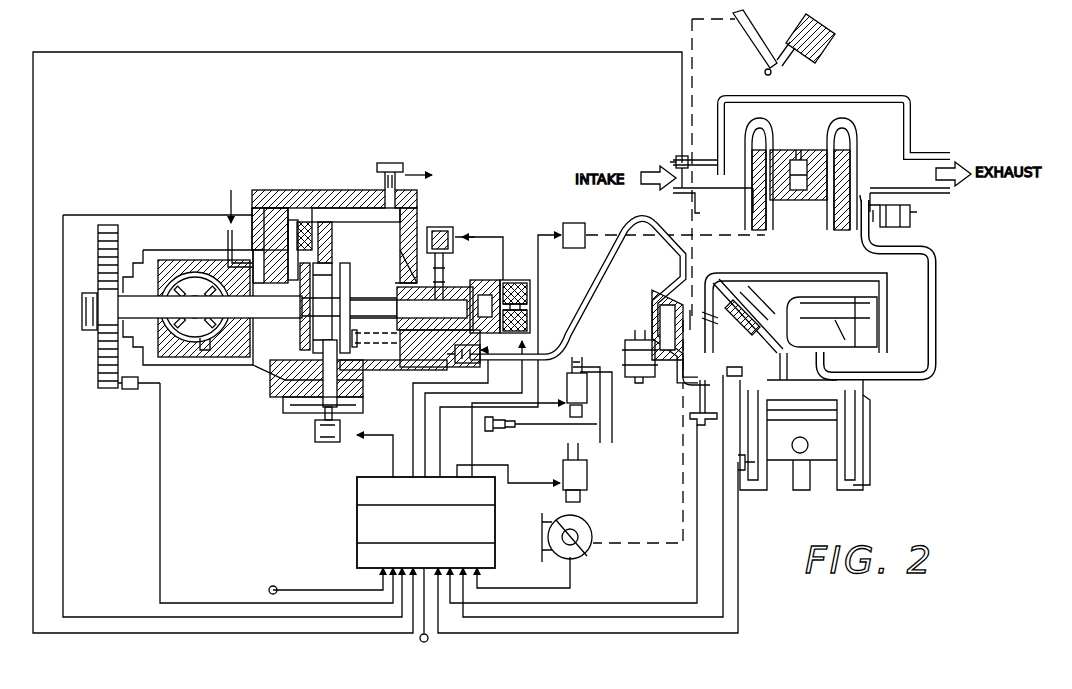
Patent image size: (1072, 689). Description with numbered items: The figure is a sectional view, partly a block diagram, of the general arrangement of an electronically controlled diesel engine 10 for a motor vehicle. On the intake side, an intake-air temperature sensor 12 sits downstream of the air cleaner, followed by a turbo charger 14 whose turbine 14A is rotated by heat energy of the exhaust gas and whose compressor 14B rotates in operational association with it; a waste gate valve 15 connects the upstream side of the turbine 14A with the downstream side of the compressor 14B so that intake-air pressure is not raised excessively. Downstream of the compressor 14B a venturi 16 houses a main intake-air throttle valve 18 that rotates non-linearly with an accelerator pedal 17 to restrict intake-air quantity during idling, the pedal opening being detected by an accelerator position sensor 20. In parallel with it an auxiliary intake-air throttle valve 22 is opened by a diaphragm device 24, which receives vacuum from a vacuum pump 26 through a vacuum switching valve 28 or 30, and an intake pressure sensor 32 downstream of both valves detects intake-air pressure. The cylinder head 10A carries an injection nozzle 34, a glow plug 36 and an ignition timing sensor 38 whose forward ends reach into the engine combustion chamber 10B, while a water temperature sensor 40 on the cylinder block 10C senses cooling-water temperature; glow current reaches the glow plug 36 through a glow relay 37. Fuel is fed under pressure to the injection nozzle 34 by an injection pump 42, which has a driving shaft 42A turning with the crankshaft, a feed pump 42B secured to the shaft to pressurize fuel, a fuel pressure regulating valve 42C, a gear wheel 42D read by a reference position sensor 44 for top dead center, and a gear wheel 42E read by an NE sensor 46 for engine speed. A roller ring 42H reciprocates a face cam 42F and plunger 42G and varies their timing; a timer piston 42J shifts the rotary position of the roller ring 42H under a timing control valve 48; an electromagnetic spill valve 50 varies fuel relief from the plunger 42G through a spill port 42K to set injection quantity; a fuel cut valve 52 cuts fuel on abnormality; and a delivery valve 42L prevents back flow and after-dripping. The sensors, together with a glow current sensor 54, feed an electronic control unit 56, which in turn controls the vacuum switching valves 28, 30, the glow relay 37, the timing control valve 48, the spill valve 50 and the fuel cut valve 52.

The diesel engine 10 is at (790, 307).
The cylinder head 10A is at (796, 319).
The engine combustion chamber 10B is at (865, 408).
The cylinder block 10C is at (870, 428).
The intake-air temperature sensor 12 is at (676, 160).
The turbo charger 14 is at (787, 205).
The turbine 14A is at (845, 143).
The compressor 14B is at (770, 141).
The waste gate valve 15 is at (917, 224).
The venturi 16 is at (662, 303).
The accelerator pedal 17 is at (754, 66).
The main intake-air throttle valve 18 is at (700, 334).
The accelerator position sensor 20 is at (592, 532).
The auxiliary intake-air throttle valve 22 is at (655, 318).
The diaphragm device 24 is at (630, 356).
The vacuum pump 26 is at (488, 441).
The vacuum switching valve 28 is at (574, 384).
The vacuum switching valve 30 is at (588, 481).
The intake pressure sensor 32 is at (700, 438).
The injection nozzle 34 is at (748, 318).
The glow plug 36 is at (797, 326).
The glow relay 37 is at (585, 226).
The ignition timing sensor 38 is at (683, 384).
The water temperature sensor 40 is at (742, 466).
The injection pump 42 is at (306, 293).
The driving shaft 42A is at (88, 335).
The feed pump 42B is at (215, 360).
The fuel pressure regulating valve 42C is at (268, 240).
The gear wheel 42D is at (115, 242).
The gear wheel 42E is at (305, 381).
The face cam 42F is at (345, 288).
The plunger 42G is at (372, 312).
The roller ring 42H is at (333, 265).
The timer piston 42J is at (305, 411).
The spill port 42K is at (491, 292).
The delivery valve 42L is at (452, 355).
The reference position sensor 44 is at (132, 400).
The NE sensor 46 is at (312, 215).
The timing control valve 48 is at (330, 443).
The electromagnetic spill valve 50 is at (513, 279).
The fuel cut valve 52 is at (447, 230).
The glow current sensor 54 is at (273, 586).
The electronic control unit 56 is at (357, 529).